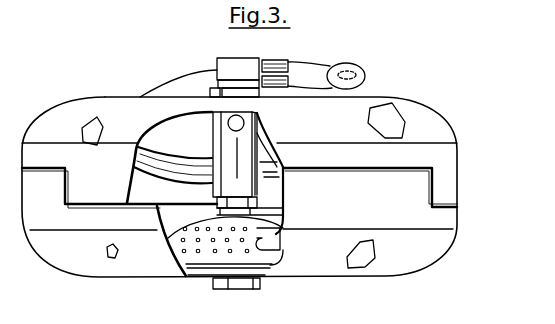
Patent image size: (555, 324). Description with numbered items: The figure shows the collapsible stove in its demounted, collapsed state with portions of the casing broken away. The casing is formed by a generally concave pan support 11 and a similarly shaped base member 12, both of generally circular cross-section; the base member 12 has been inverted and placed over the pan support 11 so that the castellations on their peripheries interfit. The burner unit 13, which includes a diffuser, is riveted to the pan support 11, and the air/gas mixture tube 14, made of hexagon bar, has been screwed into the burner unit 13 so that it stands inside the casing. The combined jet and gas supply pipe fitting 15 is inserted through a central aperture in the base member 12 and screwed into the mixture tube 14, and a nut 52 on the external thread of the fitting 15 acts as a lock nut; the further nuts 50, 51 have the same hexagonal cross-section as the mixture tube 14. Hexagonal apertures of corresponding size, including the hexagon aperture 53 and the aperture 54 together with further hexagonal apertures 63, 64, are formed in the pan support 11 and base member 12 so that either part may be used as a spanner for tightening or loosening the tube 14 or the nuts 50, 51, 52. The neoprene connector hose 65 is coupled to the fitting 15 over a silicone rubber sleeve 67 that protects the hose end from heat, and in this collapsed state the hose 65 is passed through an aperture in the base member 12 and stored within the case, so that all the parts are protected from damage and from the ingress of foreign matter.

The pan support 11 is at (418, 250).
The base member 12 is at (450, 188).
The burner unit 13 is at (195, 264).
The mixture tube 14 is at (213, 138).
The combined jet and gas supply pipe fitting 15 is at (247, 58).
The nut 50 is at (240, 289).
The nut 51 is at (282, 210).
The nut 52 is at (212, 88).
The hexagon aperture 53 is at (401, 126).
The hexagonal aperture 54 is at (367, 267).
The hexagonal aperture 63 is at (88, 120).
The hexagonal aperture 64 is at (110, 258).
The connector hose 65 is at (365, 73).
The silicone rubber sleeve 67 is at (292, 66).